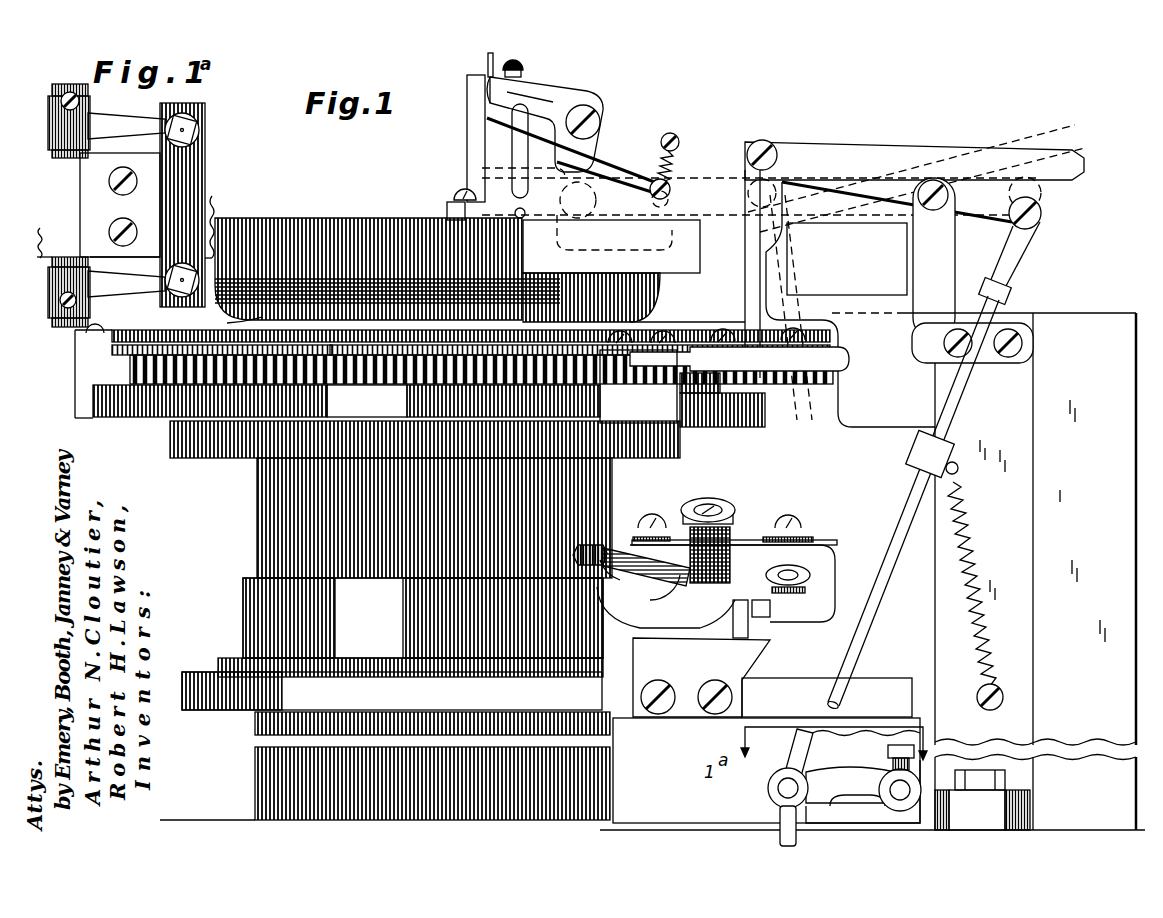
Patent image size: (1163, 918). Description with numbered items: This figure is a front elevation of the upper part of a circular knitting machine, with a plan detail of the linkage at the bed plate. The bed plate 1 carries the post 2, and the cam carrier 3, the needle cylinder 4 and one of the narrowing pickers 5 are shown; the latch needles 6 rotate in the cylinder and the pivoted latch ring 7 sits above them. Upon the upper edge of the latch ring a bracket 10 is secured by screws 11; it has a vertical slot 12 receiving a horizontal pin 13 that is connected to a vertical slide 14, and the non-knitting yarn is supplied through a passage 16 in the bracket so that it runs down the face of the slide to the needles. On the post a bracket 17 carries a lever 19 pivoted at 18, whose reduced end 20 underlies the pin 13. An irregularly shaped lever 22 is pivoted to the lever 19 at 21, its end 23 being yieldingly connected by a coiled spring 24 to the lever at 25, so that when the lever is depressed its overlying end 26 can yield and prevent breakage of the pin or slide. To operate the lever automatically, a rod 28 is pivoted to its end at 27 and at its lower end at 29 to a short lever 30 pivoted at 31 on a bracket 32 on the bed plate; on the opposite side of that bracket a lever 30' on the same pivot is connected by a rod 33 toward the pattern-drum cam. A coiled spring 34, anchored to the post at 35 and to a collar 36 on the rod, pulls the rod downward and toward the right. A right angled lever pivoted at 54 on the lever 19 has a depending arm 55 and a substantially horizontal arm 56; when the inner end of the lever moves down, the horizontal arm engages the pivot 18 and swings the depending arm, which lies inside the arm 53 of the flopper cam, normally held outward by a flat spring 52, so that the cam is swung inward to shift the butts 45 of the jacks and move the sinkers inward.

In FIG. 1, the bed plate 1 is at (216, 214).
In FIG. 1, the post 2 is at (1020, 598).
In FIG. 1, the cam carrier 3 is at (247, 628).
In FIG. 1, the needle cylinder 4 is at (268, 489).
In FIG. 1, the narrowing picker 5 is at (620, 555).
In FIG. 1, the needles 6 is at (236, 322).
In FIG. 1, the latch ring 7 is at (377, 220).
In FIG. 1, the bracket 10 is at (452, 208).
In FIG. 1, the screws 11 is at (462, 195).
In FIG. 1, the vertical slot 12 is at (518, 149).
In FIG. 1, the horizontal pin 13 is at (556, 100).
In FIG. 1, the vertical slide 14 is at (490, 64).
In FIG. 1, the passage 16 is at (522, 218).
In FIG. 1, the bracket 17 is at (995, 330).
In FIG. 1, the pivot 18 is at (933, 188).
In FIG. 1, the lever 19 is at (737, 147).
In FIG. 1, the reduced end 20 is at (497, 120).
In FIG. 1, the pivot 21 is at (598, 115).
In FIG. 1, the irregularly shaped lever 22 is at (627, 181).
In FIG. 1, the end of lever 23 is at (671, 191).
In FIG. 1, the coiled spring 24 is at (660, 165).
In FIG. 1, the spring connection point 25 is at (670, 133).
In FIG. 1, the overlying end 26 is at (524, 94).
In FIG. 1, the pivot connection 27 is at (1039, 213).
In FIG. 1A, the rod 28 is at (70, 92).
In FIG. 1, the rod 28 is at (953, 406).
In FIG. 1A, the pivot connection 29 is at (60, 153).
In FIG. 1, the pivot connection 29 is at (768, 787).
In FIG. 1A, the short lever 30 is at (126, 115).
In FIG. 1A, the lever 30' is at (126, 291).
In FIG. 1, the lever 30' is at (850, 777).
In FIG. 1A, the pivot 31 is at (182, 106).
In FIG. 1, the pivot 31 is at (893, 778).
In FIG. 1A, the bracket 32 is at (92, 202).
In FIG. 1, the bracket 32 is at (865, 818).
In FIG. 1A, the rod 33 is at (57, 323).
In FIG. 1, the rod 33 is at (780, 817).
In FIG. 1, the coiled spring 34 is at (967, 538).
In FIG. 1, the spring connection point 35 is at (993, 691).
In FIG. 1, the collar 36 is at (910, 455).
In FIG. 1, the butt 45 is at (388, 364).
In FIG. 1, the flat spring 52 is at (810, 390).
In FIG. 1, the arm 53 is at (660, 368).
In FIG. 1, the pivot 54 is at (769, 150).
In FIG. 1, the depending arm 55 is at (752, 242).
In FIG. 1, the horizontal arm 56 is at (870, 152).